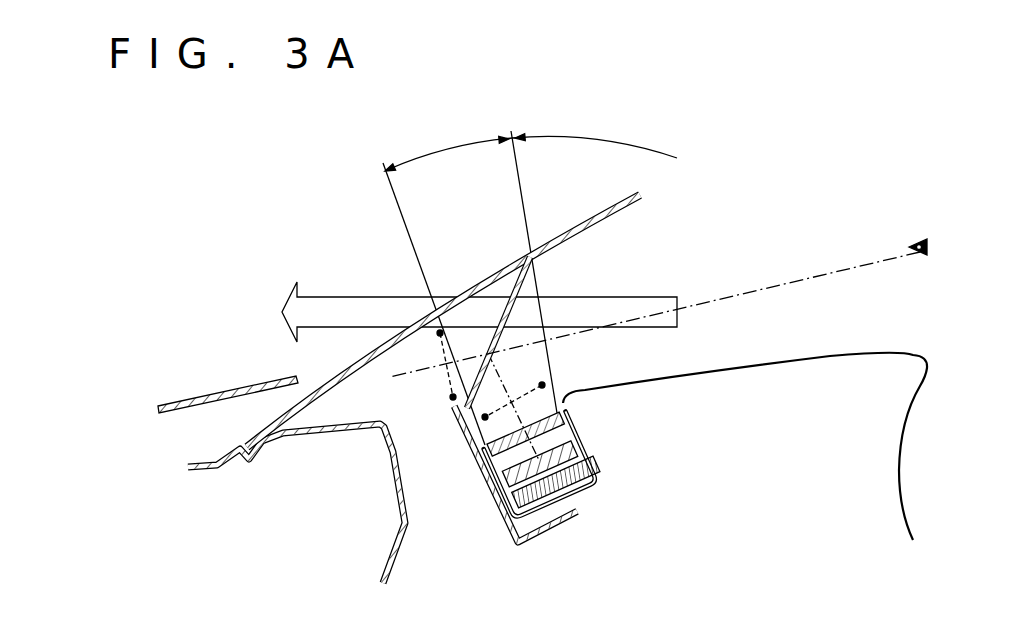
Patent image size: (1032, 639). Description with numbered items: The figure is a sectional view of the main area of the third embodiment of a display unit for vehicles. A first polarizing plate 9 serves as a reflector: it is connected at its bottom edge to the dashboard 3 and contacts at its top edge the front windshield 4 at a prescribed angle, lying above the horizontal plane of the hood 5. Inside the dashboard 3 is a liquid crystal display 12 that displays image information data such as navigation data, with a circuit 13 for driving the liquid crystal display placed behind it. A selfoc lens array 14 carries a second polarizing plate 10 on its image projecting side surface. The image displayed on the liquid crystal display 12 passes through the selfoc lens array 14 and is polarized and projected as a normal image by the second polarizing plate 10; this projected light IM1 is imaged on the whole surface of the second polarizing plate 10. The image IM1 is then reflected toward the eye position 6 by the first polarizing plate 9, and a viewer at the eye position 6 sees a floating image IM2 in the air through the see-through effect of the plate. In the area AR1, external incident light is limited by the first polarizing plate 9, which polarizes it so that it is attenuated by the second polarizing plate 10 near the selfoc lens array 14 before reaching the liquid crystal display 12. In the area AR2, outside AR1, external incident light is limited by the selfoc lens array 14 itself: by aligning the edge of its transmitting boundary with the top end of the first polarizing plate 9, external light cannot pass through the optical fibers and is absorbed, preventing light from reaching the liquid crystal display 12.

The dashboard 3 is at (577, 497).
The front windshield 4 is at (575, 225).
The hood 5 is at (246, 385).
The eye position 6 is at (918, 243).
The first polarizing plate 9 is at (533, 286).
The second polarizing plate 10 is at (487, 468).
The liquid crystal display 12 is at (588, 447).
The circuit for driving liquid crystal display 13 is at (597, 482).
The selfoc lens array 14 is at (566, 427).
The projected light (image) IM1 is at (532, 388).
The floating image IM2 is at (447, 367).
The area where external incident light is limited by the first polarizing plate AR1 is at (427, 153).
The area where external incident light is limited by the selfoc lens array AR2 is at (633, 148).